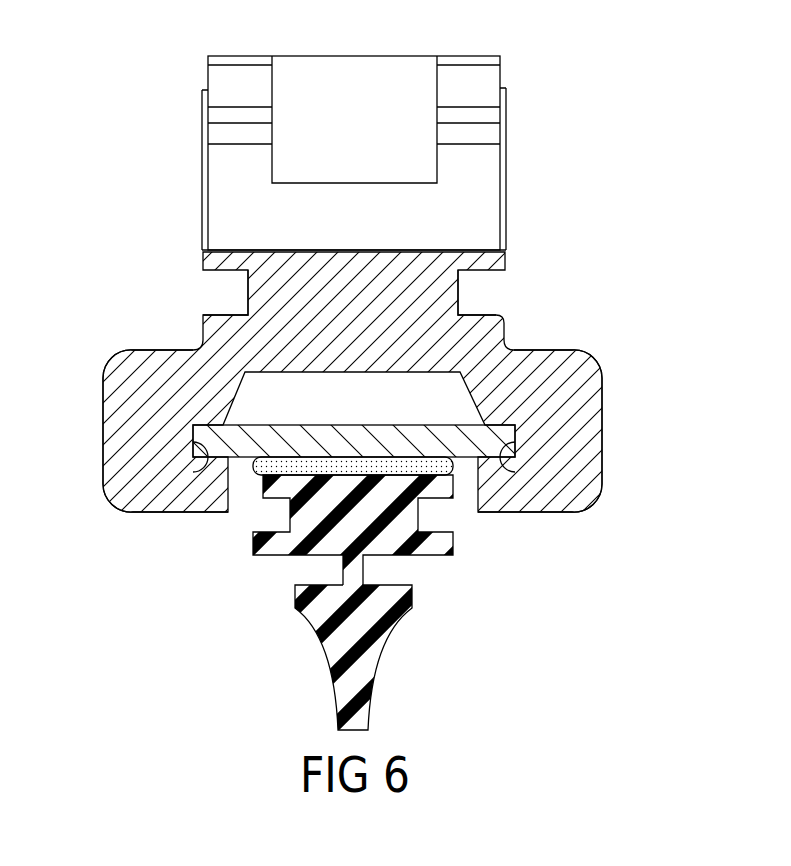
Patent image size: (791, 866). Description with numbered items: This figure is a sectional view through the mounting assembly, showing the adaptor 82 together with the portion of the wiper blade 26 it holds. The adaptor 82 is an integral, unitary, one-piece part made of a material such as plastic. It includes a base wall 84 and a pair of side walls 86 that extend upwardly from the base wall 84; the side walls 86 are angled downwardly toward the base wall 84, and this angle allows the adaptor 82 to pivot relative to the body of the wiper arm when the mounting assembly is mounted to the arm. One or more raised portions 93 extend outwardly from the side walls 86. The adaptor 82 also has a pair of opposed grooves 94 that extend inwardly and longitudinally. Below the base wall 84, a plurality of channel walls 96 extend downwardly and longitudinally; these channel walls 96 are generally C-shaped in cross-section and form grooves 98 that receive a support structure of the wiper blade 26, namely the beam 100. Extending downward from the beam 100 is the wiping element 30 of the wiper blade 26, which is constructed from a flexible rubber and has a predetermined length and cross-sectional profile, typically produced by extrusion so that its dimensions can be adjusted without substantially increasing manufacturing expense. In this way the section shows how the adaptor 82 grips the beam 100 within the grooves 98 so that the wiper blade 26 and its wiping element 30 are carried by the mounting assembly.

The adaptor 82 is at (510, 107).
The side walls 86 is at (239, 78).
The raised portions 93 is at (203, 122).
The base wall 84 is at (345, 345).
The opposed grooves 94 is at (248, 292).
The channel walls 96 is at (120, 451).
The grooves 98 is at (207, 470).
The beam 100 is at (263, 464).
The wiper blade 26 is at (455, 545).
The wiping element 30 is at (348, 705).